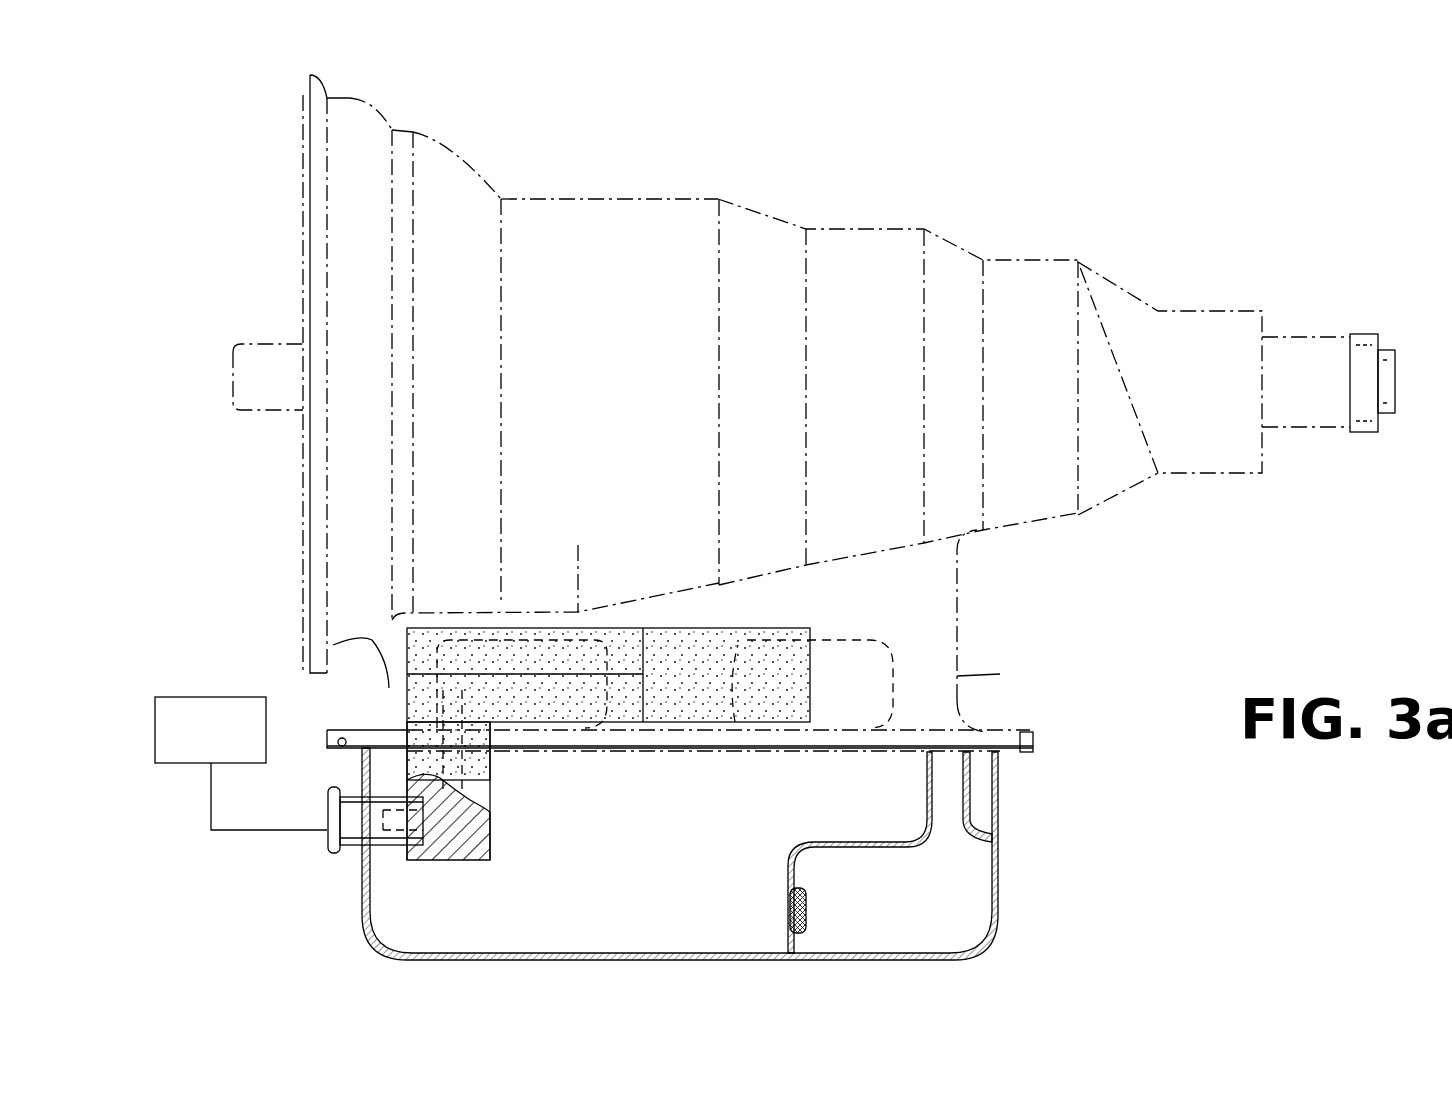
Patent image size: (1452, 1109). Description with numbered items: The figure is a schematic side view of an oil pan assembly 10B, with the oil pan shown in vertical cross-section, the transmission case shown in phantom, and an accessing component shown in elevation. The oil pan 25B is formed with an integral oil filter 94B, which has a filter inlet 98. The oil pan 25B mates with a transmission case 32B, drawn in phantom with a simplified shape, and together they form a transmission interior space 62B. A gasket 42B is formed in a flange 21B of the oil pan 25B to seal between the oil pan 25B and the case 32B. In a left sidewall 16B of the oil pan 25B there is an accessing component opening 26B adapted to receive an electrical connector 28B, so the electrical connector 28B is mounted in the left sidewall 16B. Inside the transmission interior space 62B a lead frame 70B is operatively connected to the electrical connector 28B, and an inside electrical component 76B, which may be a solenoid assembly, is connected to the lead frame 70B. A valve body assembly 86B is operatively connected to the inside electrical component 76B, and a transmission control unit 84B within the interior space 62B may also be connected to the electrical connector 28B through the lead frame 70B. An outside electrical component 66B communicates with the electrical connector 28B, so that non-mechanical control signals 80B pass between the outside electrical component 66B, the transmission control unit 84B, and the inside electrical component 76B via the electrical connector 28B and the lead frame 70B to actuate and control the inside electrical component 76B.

The oil pan assembly 10B is at (1040, 845).
The left sidewall 16B is at (360, 913).
The flange 21B is at (1025, 752).
The oil pan 25B is at (1000, 895).
The accessing component opening 26B is at (340, 833).
The electrical connector 28B is at (327, 803).
The transmission case 32B is at (962, 676).
The gasket 42B is at (1032, 733).
The transmission interior space 62B is at (926, 628).
The outside electrical component 66B is at (201, 696).
The lead frame 70B is at (472, 835).
The inside electrical component 76B is at (404, 690).
The non-mechanical control signals 80B is at (245, 833).
The transmission control unit 84B is at (812, 672).
The valve body assembly 86B is at (406, 636).
The integral oil filter 94B is at (852, 840).
The filter inlet 98 is at (790, 905).